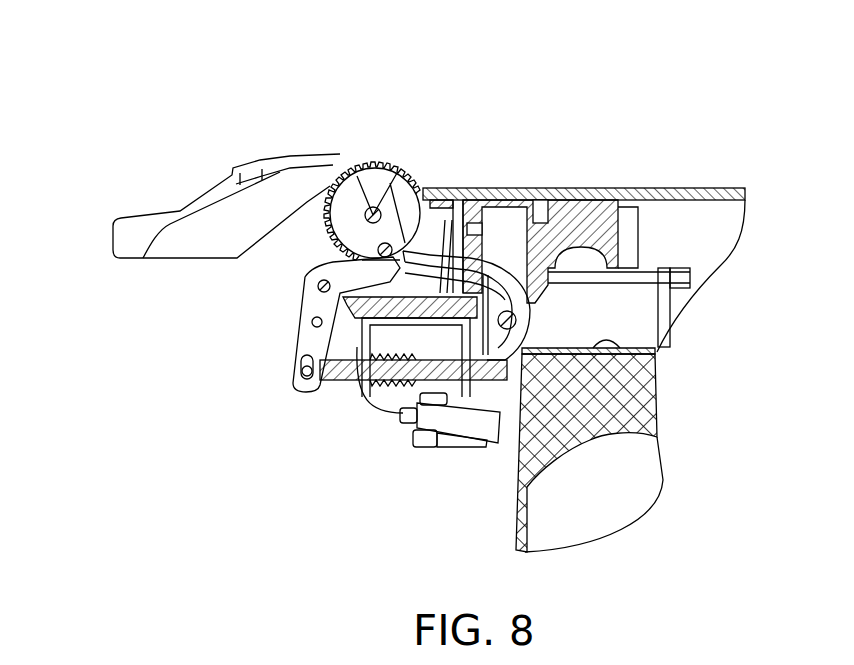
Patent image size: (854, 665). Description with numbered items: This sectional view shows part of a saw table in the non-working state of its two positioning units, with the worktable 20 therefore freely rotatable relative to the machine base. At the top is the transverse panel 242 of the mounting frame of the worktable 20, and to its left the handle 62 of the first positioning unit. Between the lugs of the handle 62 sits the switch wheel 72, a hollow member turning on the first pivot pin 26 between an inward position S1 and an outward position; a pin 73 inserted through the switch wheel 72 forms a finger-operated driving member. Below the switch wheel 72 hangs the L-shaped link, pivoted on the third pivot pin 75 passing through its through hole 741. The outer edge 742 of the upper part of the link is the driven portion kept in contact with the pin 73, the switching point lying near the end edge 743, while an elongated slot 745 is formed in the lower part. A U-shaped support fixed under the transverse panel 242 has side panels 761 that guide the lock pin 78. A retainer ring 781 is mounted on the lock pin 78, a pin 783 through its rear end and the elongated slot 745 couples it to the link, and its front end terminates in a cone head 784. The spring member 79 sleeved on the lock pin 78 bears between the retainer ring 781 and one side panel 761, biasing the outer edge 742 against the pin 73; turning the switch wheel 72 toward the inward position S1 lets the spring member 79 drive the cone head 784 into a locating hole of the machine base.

The inward position S1 is at (444, 98).
The worktable 20 is at (720, 188).
The transverse panel 242 is at (437, 300).
The first pivot pin 26 is at (370, 205).
The handle 62 is at (180, 208).
The switch wheel 72 is at (382, 160).
The pin 73 is at (412, 160).
The through hole 741 is at (300, 300).
The outer edge 742 is at (382, 245).
The end edge 743 is at (433, 160).
The elongated slot 745 is at (303, 361).
The third pivot pin 75 is at (318, 286).
The side panel 761 is at (362, 348).
The lock pin 78 is at (338, 380).
The retainer ring 781 is at (441, 385).
The pin 783 is at (302, 374).
The cone head 784 is at (503, 369).
The spring member 79 is at (393, 392).